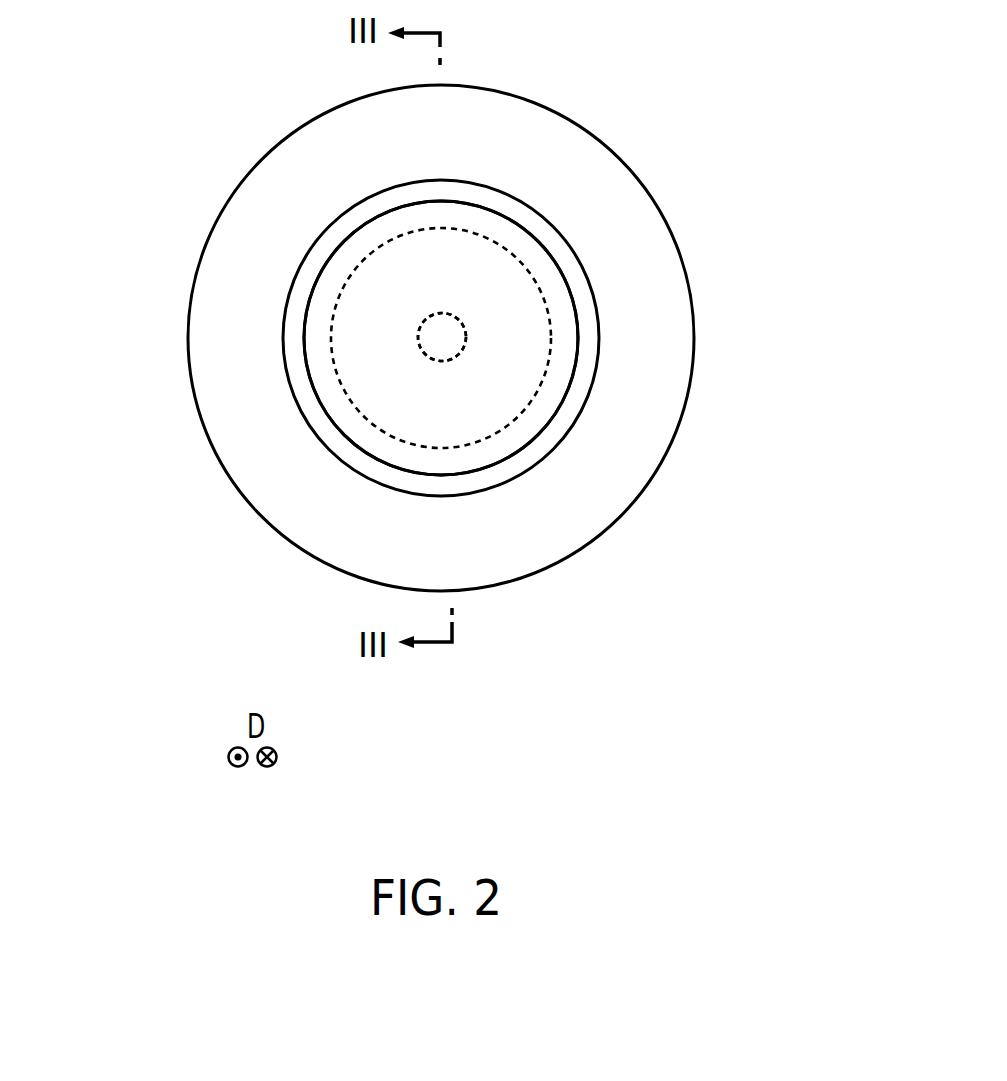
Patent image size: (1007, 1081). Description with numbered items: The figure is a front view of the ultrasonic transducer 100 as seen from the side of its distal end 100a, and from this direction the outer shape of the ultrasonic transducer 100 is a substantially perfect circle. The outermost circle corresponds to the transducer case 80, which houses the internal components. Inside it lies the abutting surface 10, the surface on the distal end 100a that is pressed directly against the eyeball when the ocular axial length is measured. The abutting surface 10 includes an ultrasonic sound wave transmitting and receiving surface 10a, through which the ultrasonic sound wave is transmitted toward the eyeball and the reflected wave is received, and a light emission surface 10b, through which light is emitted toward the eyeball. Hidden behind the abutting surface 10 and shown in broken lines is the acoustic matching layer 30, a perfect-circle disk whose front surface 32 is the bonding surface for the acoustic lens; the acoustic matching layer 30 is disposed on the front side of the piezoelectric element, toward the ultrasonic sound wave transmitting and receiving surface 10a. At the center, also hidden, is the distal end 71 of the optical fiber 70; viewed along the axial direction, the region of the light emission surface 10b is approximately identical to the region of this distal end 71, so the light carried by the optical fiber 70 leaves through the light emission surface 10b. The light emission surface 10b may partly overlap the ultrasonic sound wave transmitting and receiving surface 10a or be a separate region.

The ultrasonic transducer 100 is at (216, 206).
The distal end 100a is at (392, 388).
The abutting surface 10 is at (337, 389).
The ultrasonic sound wave transmitting and receiving surface 10a is at (498, 348).
The light emission surface 10b is at (438, 343).
The acoustic matching layer 30 is at (430, 260).
The front surface 32 is at (418, 225).
The optical fiber 70 is at (448, 333).
The distal end 71 is at (560, 197).
The transducer case 80 is at (625, 393).